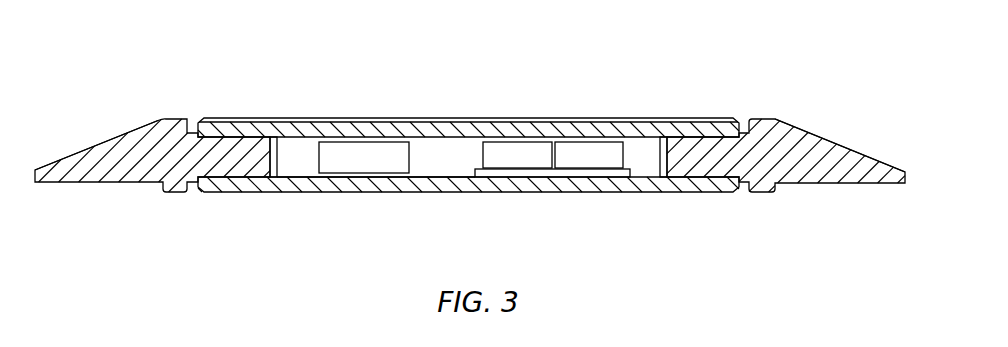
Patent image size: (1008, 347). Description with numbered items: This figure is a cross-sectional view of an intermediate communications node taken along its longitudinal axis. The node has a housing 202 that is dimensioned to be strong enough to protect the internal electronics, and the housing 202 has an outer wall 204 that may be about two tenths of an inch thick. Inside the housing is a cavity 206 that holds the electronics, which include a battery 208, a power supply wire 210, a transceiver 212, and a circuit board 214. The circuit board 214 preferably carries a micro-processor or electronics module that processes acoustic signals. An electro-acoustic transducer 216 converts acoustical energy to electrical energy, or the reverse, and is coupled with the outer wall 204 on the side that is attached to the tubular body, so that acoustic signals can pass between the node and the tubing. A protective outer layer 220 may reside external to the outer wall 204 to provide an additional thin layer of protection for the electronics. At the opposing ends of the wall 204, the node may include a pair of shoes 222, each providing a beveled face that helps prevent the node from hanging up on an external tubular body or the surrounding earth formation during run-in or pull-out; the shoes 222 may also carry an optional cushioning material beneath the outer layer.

The housing 202 is at (633, 193).
The outer wall 204 is at (618, 121).
The cavity 206 is at (304, 178).
The battery 208 is at (357, 147).
The power supply wire 210 is at (447, 171).
The transceiver 212 is at (590, 147).
The circuit board 214 is at (548, 178).
The electro-acoustic transducer 216 is at (518, 147).
The protective outer layer 220 is at (143, 125).
The shoe 222 is at (90, 147).